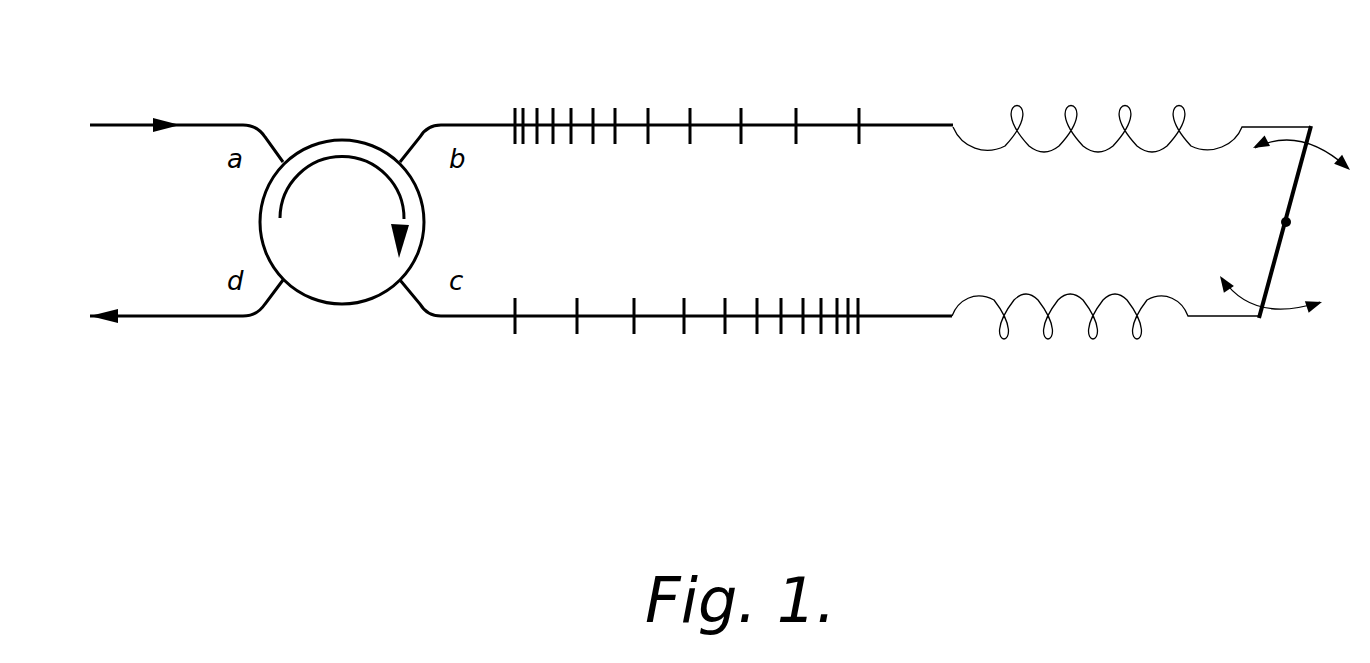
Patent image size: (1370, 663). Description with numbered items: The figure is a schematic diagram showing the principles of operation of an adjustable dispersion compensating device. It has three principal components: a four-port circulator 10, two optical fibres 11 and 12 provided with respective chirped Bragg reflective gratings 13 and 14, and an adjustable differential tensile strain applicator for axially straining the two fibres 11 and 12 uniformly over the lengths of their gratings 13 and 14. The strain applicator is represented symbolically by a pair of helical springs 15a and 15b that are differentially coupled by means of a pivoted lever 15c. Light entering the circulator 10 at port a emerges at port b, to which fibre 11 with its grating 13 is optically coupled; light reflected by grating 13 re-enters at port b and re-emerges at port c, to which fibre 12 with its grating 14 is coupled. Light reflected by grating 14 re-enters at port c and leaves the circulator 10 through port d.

The four-port circulator 10 is at (340, 207).
The optical fibre 11 is at (895, 127).
The optical fibre 12 is at (898, 316).
The chirped Bragg reflective grating 13 is at (796, 109).
The chirped Bragg reflective grating 14 is at (577, 334).
The helical spring 15a is at (1068, 103).
The helical spring 15b is at (1050, 338).
The pivoted lever 15c is at (1273, 267).